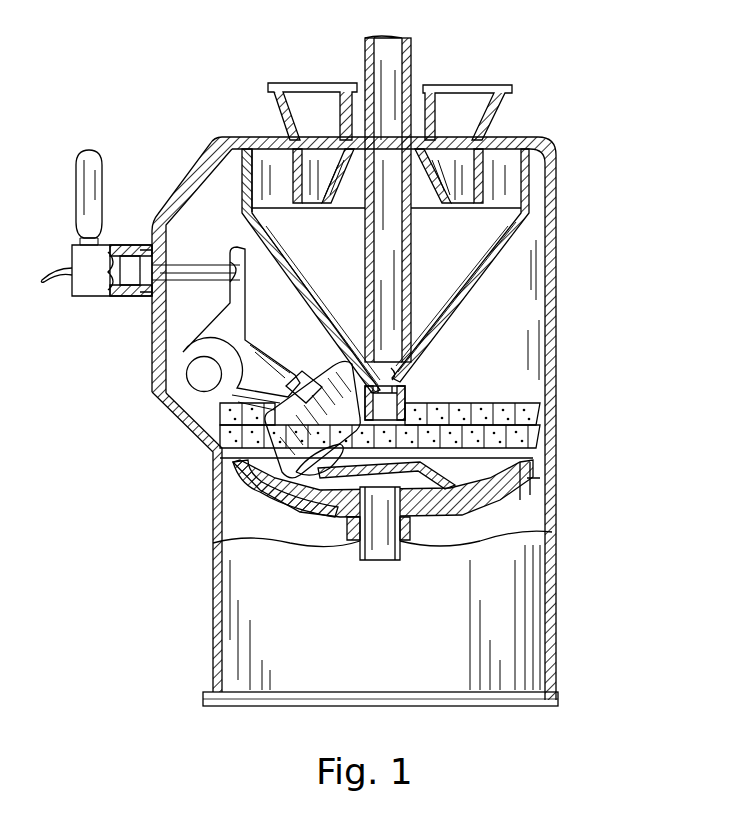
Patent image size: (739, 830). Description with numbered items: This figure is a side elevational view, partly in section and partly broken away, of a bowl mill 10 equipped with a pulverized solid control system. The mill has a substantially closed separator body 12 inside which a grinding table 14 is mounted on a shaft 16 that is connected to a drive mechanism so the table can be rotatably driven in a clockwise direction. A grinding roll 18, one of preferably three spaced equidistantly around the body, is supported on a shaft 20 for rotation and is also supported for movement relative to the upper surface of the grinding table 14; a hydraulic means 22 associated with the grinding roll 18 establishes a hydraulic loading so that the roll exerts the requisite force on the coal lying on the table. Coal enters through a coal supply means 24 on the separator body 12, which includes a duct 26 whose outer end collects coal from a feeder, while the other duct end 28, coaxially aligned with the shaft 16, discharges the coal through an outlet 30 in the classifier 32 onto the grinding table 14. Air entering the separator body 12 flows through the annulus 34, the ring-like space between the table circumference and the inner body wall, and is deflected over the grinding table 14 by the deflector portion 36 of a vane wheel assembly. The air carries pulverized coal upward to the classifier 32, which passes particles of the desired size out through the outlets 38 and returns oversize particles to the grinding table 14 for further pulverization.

The bowl mill 10 is at (562, 531).
The separator body 12 is at (558, 393).
The grinding table 14 is at (462, 506).
The shaft 16 is at (358, 548).
The grinding roll 18 is at (332, 362).
The shaft 20 is at (278, 497).
The hydraulic means 22 is at (128, 240).
The coal supply means 24 is at (411, 288).
The duct 26 is at (364, 255).
The duct end 28 is at (395, 348).
The outlet 30 is at (405, 390).
The classifier 32 is at (445, 334).
The annulus 34 is at (534, 482).
The deflector portion 36 is at (452, 410).
The outlets 38 is at (300, 88).